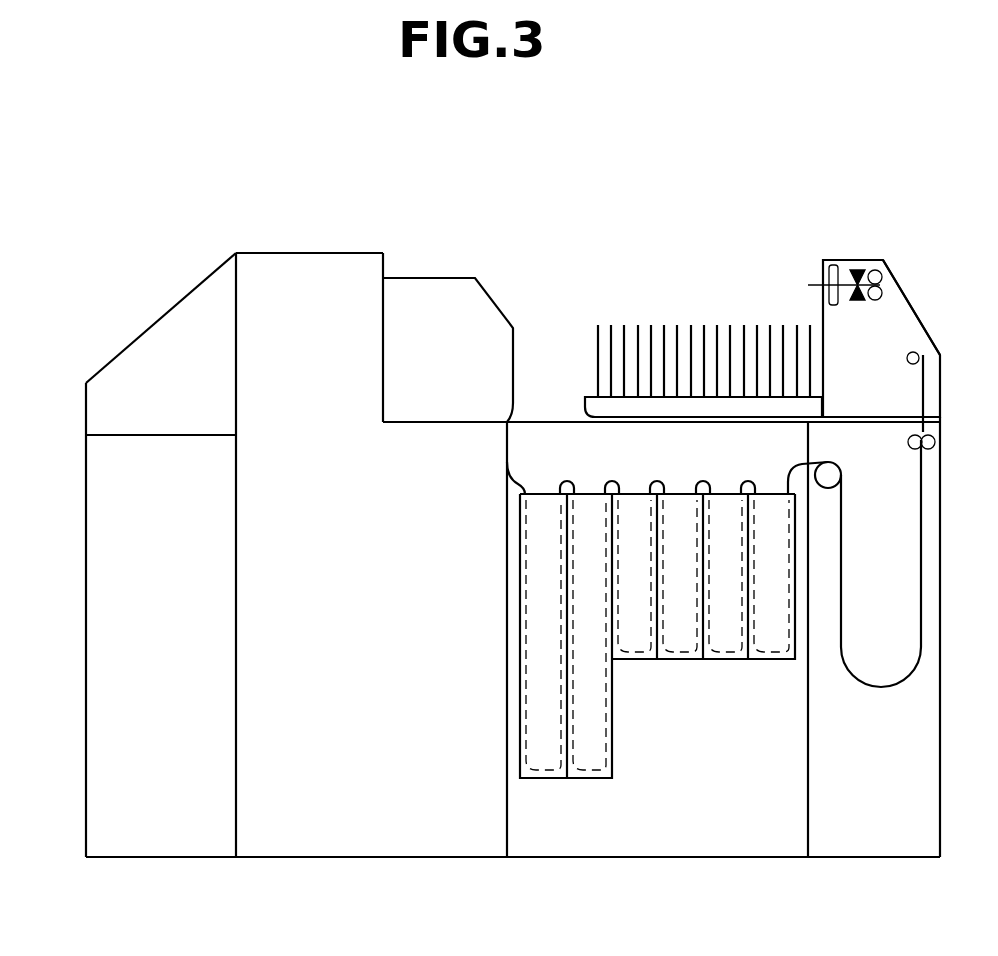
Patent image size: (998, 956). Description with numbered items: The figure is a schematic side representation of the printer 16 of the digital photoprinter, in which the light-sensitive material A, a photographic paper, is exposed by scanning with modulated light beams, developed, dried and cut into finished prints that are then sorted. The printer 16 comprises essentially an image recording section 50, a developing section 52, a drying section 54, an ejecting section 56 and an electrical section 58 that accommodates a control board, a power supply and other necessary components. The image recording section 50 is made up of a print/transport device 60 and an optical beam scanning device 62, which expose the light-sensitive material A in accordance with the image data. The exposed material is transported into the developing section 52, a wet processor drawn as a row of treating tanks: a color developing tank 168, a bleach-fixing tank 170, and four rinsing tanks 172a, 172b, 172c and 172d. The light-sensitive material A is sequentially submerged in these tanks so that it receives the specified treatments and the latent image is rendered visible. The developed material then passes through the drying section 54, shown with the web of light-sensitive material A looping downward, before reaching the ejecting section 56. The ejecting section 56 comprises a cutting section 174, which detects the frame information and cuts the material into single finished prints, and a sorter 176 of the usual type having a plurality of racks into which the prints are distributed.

The printer 16 is at (549, 178).
The image recording section 50 is at (125, 268).
The developing section 52 is at (782, 832).
The drying section 54 is at (900, 819).
The ejecting section 56 is at (741, 201).
The electrical section 58 is at (186, 646).
The print/transport device 60 is at (338, 465).
The optical beam scanning device 62 is at (192, 394).
The color developing tank 168 is at (545, 779).
The bleach-fixing tank 170 is at (612, 772).
The rinsing tank 172a is at (642, 660).
The rinsing tank 172b is at (678, 498).
The rinsing tank 172c is at (744, 660).
The rinsing tank 172d is at (774, 497).
The cutting section 174 is at (962, 312).
The sorter 176 is at (700, 310).
The light-sensitive material A is at (843, 572).